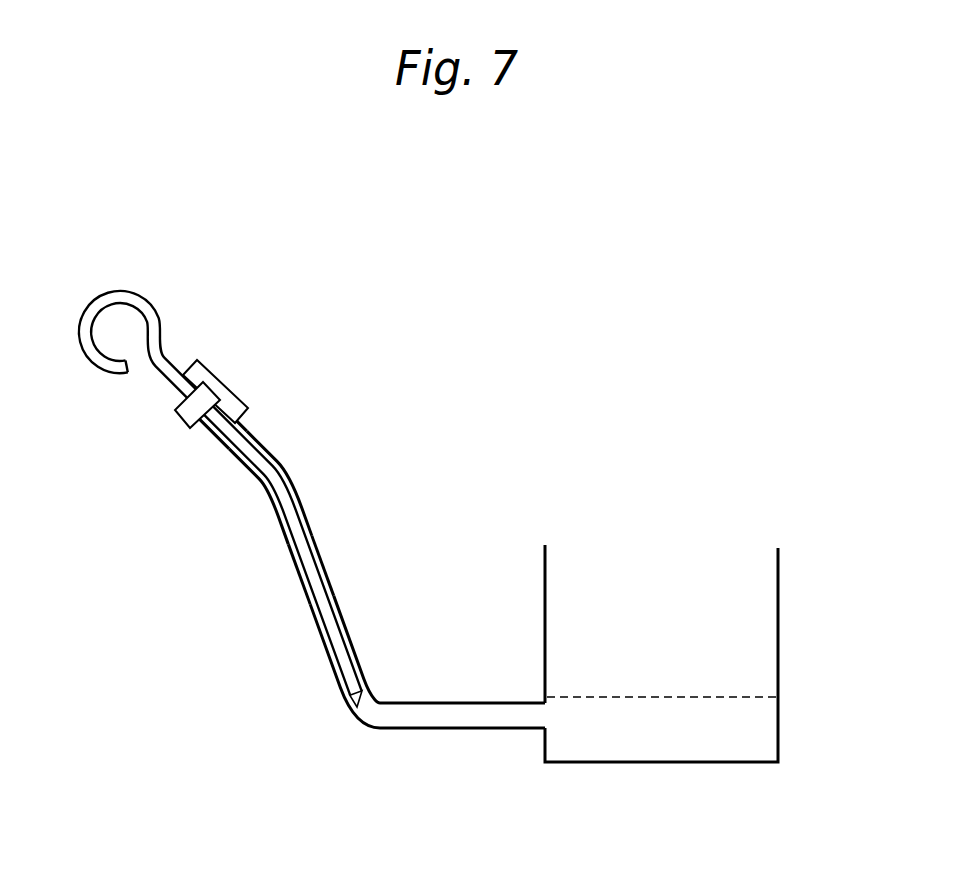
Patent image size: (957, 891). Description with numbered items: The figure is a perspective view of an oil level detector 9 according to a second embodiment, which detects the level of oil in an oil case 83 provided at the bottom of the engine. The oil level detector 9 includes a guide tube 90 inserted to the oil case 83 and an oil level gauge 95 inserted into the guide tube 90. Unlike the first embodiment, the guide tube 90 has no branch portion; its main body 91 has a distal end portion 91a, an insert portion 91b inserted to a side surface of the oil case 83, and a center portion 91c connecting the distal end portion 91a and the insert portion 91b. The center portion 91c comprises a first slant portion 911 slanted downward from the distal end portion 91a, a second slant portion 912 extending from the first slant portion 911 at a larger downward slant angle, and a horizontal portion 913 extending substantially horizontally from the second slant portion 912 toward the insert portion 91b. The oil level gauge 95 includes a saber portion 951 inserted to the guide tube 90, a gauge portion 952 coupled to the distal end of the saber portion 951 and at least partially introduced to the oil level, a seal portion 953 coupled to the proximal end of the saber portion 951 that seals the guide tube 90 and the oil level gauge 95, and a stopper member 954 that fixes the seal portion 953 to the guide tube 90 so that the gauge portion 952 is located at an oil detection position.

The oil level detector 9 is at (315, 527).
The guide tube 90 is at (475, 527).
The main body 91 is at (347, 629).
The first slant portion 911 is at (268, 453).
The second slant portion 912 is at (337, 578).
The horizontal portion 913 is at (420, 728).
The distal end portion 91a is at (222, 440).
The insert portion 91b is at (520, 728).
The center portion 91c is at (315, 603).
The oil level gauge 95 is at (257, 527).
The saber portion 951 is at (297, 517).
The gauge portion 952 is at (352, 708).
The seal portion 953 is at (193, 408).
The stopper member 954 is at (195, 372).
The oil case 83 is at (779, 732).